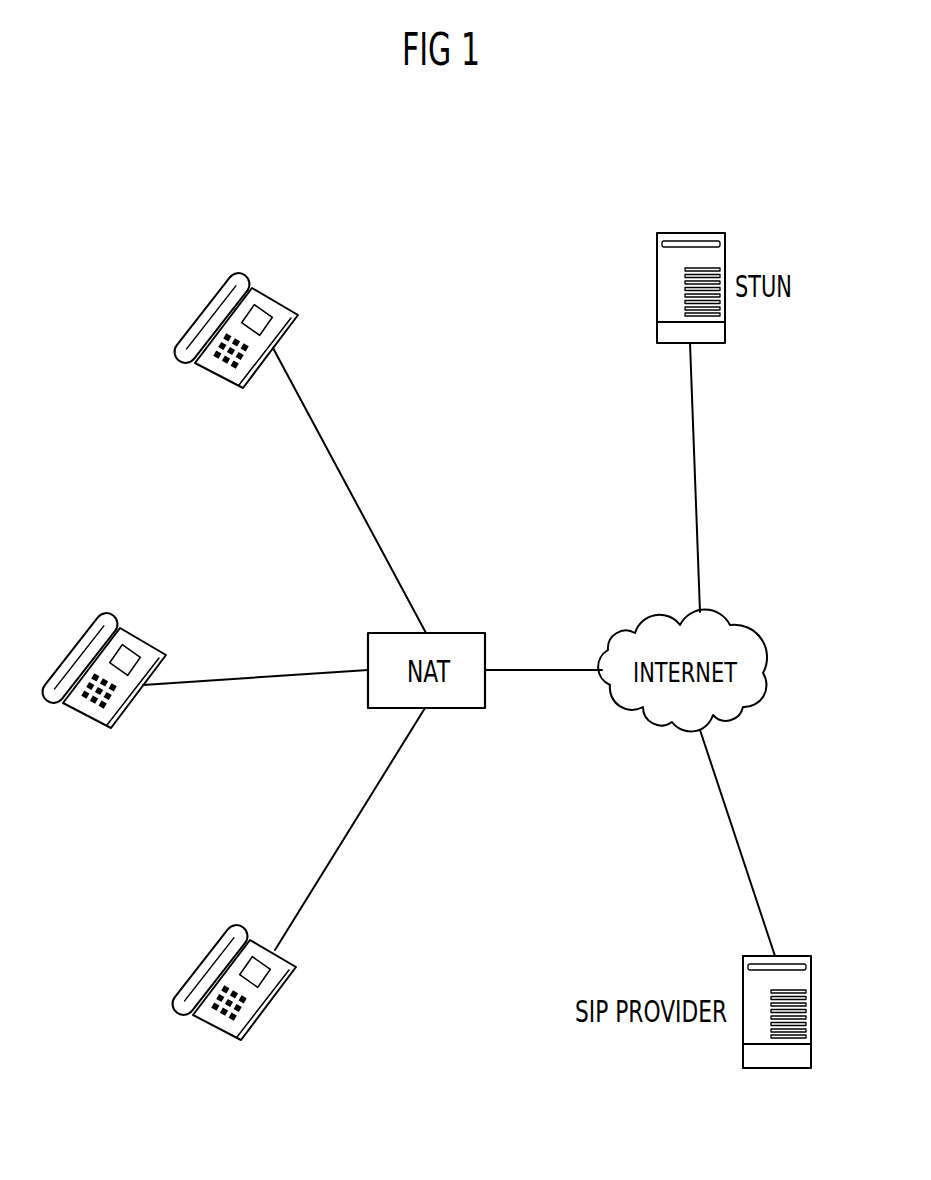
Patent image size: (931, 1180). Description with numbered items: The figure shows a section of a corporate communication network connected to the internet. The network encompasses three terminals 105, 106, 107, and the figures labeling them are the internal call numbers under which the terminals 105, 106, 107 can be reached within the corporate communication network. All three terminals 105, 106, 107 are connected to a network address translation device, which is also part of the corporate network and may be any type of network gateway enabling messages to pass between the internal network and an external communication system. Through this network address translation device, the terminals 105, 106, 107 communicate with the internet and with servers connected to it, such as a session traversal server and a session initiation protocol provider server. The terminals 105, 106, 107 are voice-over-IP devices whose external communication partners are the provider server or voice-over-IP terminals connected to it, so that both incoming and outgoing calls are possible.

The terminal 105 is at (99, 665).
The terminal 106 is at (218, 328).
The terminal 107 is at (226, 980).